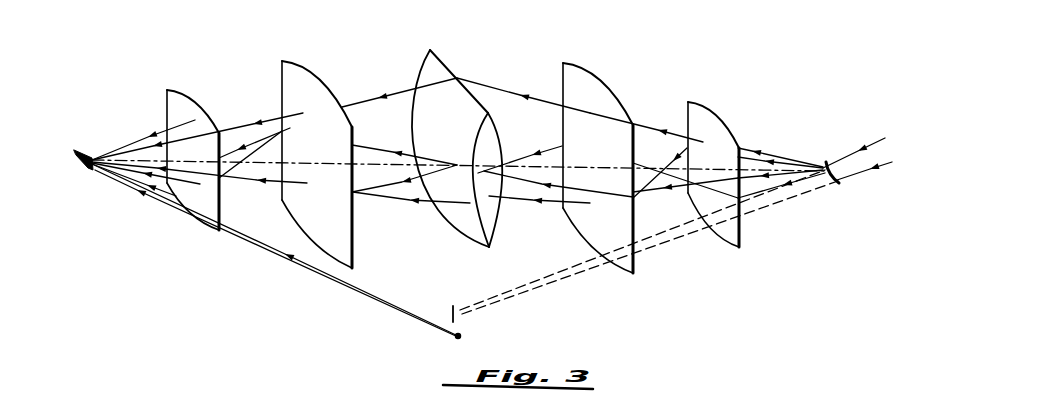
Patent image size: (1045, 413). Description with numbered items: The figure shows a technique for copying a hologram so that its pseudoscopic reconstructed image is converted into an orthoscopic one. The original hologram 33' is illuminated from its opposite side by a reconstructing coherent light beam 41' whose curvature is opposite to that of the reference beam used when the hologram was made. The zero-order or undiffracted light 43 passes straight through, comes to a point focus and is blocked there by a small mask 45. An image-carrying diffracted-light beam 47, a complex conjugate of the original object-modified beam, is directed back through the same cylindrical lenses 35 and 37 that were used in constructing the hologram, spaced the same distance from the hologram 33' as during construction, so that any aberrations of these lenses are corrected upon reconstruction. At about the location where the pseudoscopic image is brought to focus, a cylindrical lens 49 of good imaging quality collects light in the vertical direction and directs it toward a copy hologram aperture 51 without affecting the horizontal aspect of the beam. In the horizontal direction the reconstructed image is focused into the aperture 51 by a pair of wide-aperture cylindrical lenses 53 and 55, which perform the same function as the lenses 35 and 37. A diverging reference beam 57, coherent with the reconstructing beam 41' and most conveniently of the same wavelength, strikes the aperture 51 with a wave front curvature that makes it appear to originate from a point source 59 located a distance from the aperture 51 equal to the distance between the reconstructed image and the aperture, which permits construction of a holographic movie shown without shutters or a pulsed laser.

The original hologram 33' is at (828, 149).
The cylindrical lens 35 is at (585, 80).
The cylindrical lens 37 is at (702, 115).
The reconstructing coherent light beam 41' is at (857, 139).
The zero-order or undiffracted light 43 is at (672, 230).
The small mask 45 is at (453, 310).
The image-carrying diffracted-light beam 47 is at (782, 168).
The cylindrical lens 49 is at (440, 69).
The copy hologram aperture 51 is at (75, 150).
The cylindrical lens 53 is at (302, 78).
The cylindrical lens 55 is at (183, 101).
The diverging reference beam 57 is at (236, 234).
The point source 59 is at (453, 342).